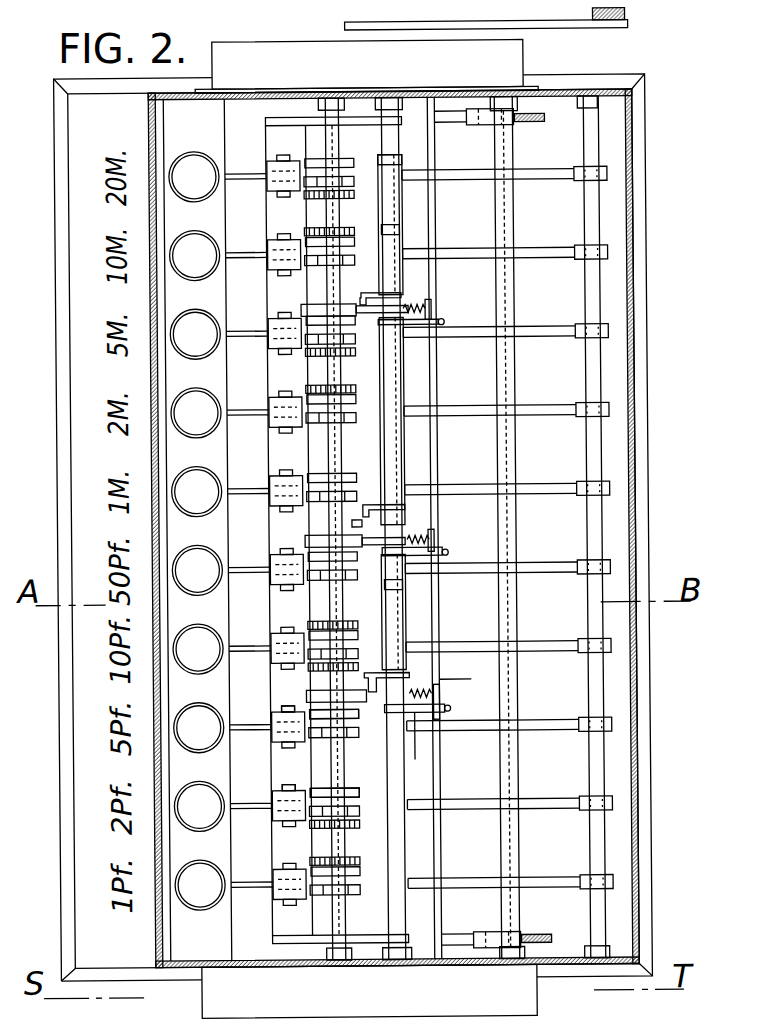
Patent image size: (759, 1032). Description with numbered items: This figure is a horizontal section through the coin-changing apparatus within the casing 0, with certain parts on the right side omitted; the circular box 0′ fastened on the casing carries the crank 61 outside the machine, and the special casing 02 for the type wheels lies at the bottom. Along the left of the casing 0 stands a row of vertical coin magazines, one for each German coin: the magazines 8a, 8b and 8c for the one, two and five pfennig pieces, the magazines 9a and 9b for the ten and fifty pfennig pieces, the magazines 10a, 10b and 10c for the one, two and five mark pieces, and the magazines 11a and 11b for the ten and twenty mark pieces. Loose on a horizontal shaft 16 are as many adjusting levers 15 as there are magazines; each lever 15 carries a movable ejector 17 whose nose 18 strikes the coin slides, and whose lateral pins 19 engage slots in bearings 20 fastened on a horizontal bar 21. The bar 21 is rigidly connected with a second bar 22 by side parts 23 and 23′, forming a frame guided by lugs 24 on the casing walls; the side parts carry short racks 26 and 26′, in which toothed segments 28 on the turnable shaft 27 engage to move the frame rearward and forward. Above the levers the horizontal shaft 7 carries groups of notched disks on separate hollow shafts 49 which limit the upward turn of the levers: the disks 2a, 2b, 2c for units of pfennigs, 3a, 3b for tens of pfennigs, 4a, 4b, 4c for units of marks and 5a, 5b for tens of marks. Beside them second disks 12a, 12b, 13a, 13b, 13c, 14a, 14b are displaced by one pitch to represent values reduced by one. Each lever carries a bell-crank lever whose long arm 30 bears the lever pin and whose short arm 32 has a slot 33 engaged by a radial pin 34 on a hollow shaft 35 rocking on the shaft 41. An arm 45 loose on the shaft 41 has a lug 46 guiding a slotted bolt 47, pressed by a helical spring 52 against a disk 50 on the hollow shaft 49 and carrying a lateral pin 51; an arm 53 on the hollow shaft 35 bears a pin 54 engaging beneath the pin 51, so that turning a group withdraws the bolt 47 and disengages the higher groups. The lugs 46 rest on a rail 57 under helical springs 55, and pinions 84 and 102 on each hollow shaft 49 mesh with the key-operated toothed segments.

The casing 0 is at (645, 481).
The circular box 0′ is at (320, 48).
The special casing 02 is at (369, 991).
The crank 61 is at (560, 30).
The coin magazine 11b is at (194, 177).
The coin magazine 11a is at (194, 255).
The coin magazine 10c is at (195, 334).
The coin magazine 10b is at (196, 413).
The coin magazine 10a is at (196, 491).
The coin magazine 9b is at (197, 570).
The coin magazine 9a is at (198, 649).
The coin magazine 8c is at (199, 728).
The coin magazine 8b is at (199, 806).
The coin magazine 8a is at (200, 885).
The horizontal bar 21 is at (268, 130).
The horizontal shaft 7 is at (330, 135).
The hollow shaft 49 is at (329, 214).
The side part 23′ is at (342, 118).
The side part 23 is at (345, 955).
The shaft 41 is at (394, 137).
The horizontal rail 57 is at (438, 464).
The second bar 22 is at (517, 142).
The horizontal shaft 27 is at (516, 534).
The horizontal shaft 16 is at (602, 528).
The adjusting lever 15 is at (535, 337).
The lug 24 is at (436, 118).
The toothed segment 28 is at (480, 126).
The short rack 26′ is at (549, 120).
The short rack 26 is at (549, 940).
The second notched disk 14b is at (275, 160).
The notched disk 5b is at (308, 186).
The second notched disk 14a is at (275, 242).
The notched disk 5a is at (308, 262).
The second notched disk 13c is at (275, 320).
The notched disk 4c is at (308, 342).
The second notched disk 13b is at (275, 400).
The notched disk 4b is at (308, 422).
The second notched disk 13a is at (275, 478).
The notched disk 4a is at (308, 500).
The second notched disk 12b is at (275, 556).
The notched disk 3b is at (308, 579).
The second notched disk 12a is at (275, 634).
The notched disk 3a is at (308, 657).
The notched disk 2c is at (308, 735).
The nose 18 is at (300, 724).
The lateral pin 19 is at (288, 705).
The bearing 20 is at (280, 708).
The notched disk 2b is at (308, 814).
The ejector 17 is at (322, 805).
The notched disk 2a is at (308, 884).
The pinion 102 is at (340, 198).
The pinion 84 is at (308, 231).
The long arm 30 is at (405, 283).
The short arm 32 is at (405, 258).
The slot 33 is at (405, 220).
The radial pin 34 is at (405, 240).
The hollow shaft 35 is at (405, 590).
The arm 53 is at (405, 508).
The disk 50 is at (303, 307).
The lateral pin 51 is at (410, 522).
The lateral pin 54 is at (353, 523).
The lug 46 is at (427, 308).
The helical spring 55 is at (443, 322).
The slotted bolt 47 is at (448, 681).
The arm 45 is at (437, 720).
The helical spring 52 is at (415, 756).